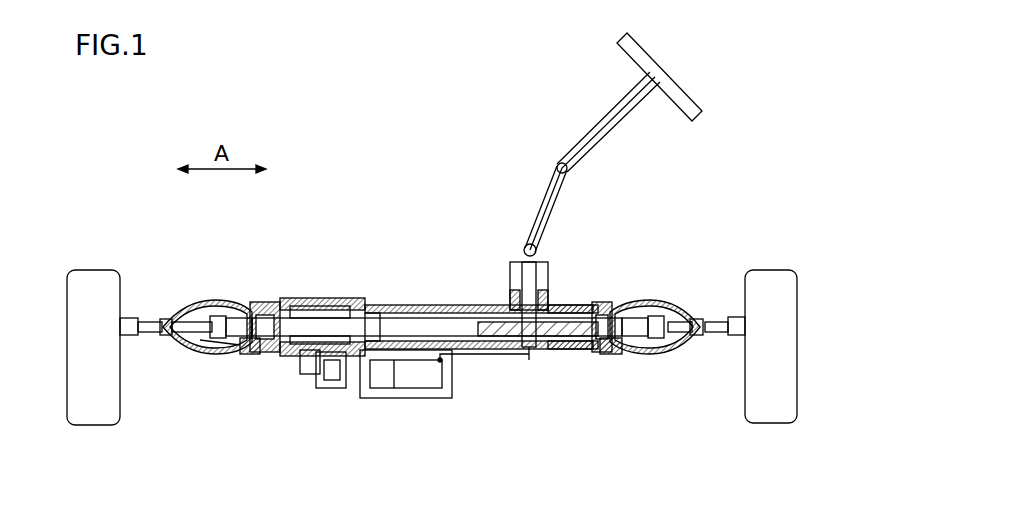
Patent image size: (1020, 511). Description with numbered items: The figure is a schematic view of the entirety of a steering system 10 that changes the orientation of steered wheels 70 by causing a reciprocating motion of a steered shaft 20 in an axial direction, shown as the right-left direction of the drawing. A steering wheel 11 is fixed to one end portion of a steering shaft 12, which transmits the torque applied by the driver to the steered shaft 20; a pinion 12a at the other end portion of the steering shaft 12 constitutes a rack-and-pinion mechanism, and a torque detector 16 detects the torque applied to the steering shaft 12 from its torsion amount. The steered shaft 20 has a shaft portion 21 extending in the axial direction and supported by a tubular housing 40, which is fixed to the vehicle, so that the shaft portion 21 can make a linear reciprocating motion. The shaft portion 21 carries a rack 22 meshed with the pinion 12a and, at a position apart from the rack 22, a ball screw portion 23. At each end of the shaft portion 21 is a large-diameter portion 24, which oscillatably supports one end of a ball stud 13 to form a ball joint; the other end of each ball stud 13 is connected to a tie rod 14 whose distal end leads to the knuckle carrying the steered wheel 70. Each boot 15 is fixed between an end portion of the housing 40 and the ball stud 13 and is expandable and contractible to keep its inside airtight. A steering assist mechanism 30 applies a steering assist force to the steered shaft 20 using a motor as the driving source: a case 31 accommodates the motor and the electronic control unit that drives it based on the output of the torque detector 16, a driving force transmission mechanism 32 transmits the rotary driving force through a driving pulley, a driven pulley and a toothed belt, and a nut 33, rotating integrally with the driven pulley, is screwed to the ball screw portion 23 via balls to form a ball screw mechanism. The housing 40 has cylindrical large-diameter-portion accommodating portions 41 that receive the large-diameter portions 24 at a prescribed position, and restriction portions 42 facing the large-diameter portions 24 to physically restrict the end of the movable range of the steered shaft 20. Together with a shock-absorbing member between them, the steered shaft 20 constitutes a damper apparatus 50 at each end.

The steering system 10 is at (327, 149).
The steering wheel 11 is at (652, 45).
The steering shaft 12 is at (520, 258).
The pinion 12a is at (530, 350).
The ball stud 13 is at (192, 305).
The tie rod 14 is at (140, 321).
The boot 15 is at (220, 316).
The torque detector 16 is at (550, 283).
The steered shaft 20 is at (398, 313).
The shaft portion 21 is at (437, 320).
The rack 22 is at (510, 350).
The ball screw portion 23 is at (366, 330).
The large-diameter portion 24 is at (240, 318).
The steering assist mechanism 30 is at (330, 388).
The case 31 is at (416, 398).
The driving force transmission mechanism 32 is at (300, 370).
The nut 33 is at (333, 298).
The housing 40 is at (595, 355).
The large-diameter-portion accommodating portion 41 is at (252, 355).
The restriction portion 42 is at (272, 302).
The damper apparatus 50 is at (240, 344).
The steered wheel 70 is at (86, 270).